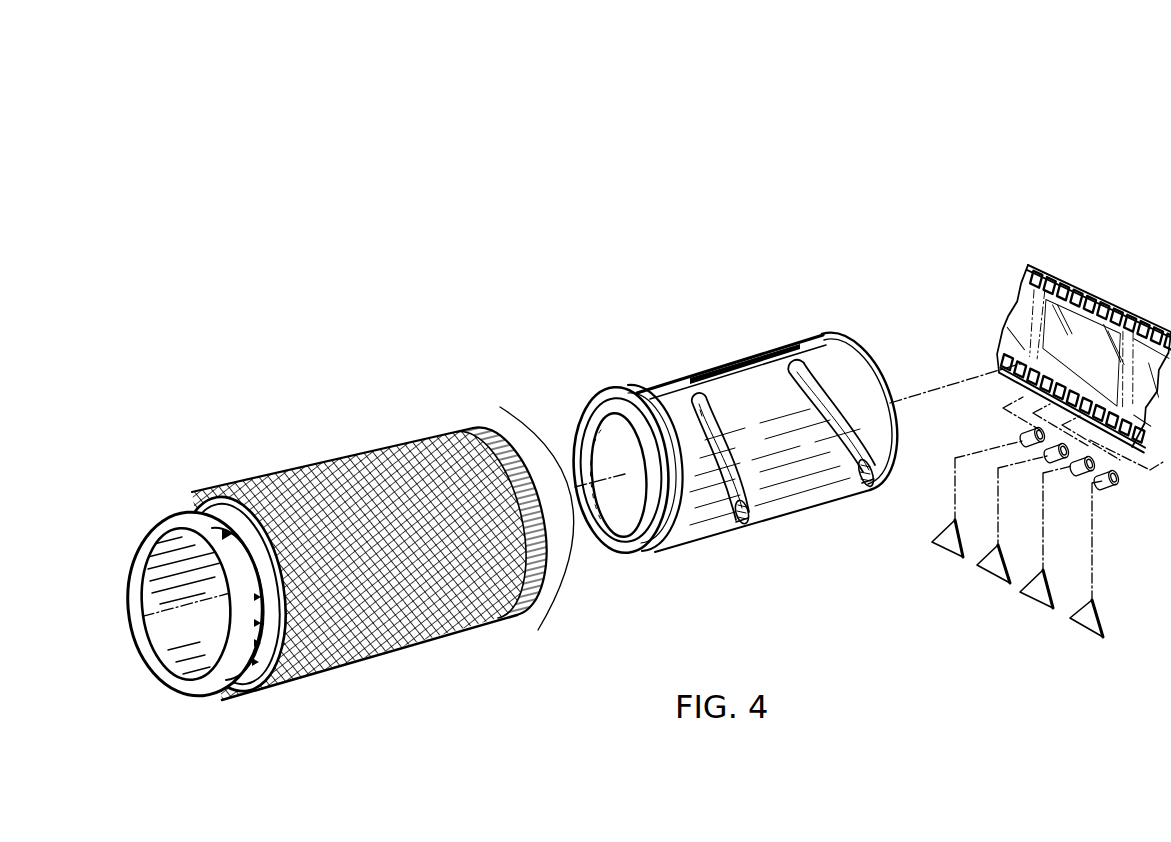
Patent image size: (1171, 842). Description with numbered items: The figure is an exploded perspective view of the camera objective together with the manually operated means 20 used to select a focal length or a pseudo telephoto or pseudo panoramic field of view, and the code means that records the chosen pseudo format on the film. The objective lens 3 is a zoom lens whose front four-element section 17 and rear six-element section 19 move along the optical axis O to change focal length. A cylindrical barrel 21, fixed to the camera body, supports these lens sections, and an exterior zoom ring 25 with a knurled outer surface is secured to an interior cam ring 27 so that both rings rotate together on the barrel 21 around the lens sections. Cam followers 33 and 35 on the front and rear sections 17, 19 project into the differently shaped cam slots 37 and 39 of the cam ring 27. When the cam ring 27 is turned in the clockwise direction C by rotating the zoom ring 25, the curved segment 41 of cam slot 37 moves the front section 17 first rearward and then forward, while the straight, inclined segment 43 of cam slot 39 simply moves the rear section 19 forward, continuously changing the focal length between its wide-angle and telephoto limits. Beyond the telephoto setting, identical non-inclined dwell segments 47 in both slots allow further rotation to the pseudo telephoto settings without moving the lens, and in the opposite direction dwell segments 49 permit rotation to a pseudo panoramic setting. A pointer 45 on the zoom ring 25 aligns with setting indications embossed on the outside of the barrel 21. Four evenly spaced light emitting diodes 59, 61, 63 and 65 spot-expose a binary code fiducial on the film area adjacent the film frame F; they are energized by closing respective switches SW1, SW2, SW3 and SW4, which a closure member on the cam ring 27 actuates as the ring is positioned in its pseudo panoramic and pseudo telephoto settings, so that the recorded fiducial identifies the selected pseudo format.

The manually operated means 20 is at (464, 360).
The cylindrical barrel 21 is at (500, 453).
The zoom ring 25 is at (402, 650).
The pointer 45 is at (240, 573).
The objective lens 3 is at (618, 464).
The optical axis O is at (932, 391).
The clockwise direction C is at (533, 630).
The rear six-element section 19 is at (858, 364).
The front four-element section 17 is at (635, 530).
The cam ring 27 is at (822, 518).
The cam follower 33 is at (744, 512).
The cam follower 35 is at (860, 466).
The cam slot 37 is at (721, 440).
The cam slot 39 is at (823, 414).
The curved segment 41 is at (748, 468).
The straight, inclined segment 43 is at (850, 450).
The dwell segments 47 is at (764, 397).
The dwell segments 49 is at (743, 526).
The film frame F is at (1085, 347).
The light emitting diode 59 is at (1022, 437).
The light emitting diode 61 is at (1045, 455).
The light emitting diode 63 is at (1072, 467).
The light emitting diode 65 is at (1102, 489).
The switch SW1 is at (950, 552).
The switch SW2 is at (990, 573).
The switch SW3 is at (1032, 600).
The switch SW4 is at (1078, 625).